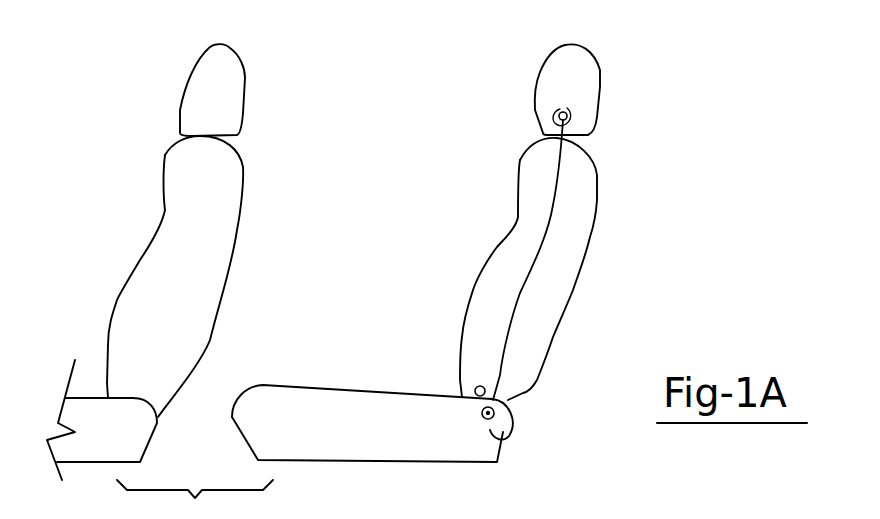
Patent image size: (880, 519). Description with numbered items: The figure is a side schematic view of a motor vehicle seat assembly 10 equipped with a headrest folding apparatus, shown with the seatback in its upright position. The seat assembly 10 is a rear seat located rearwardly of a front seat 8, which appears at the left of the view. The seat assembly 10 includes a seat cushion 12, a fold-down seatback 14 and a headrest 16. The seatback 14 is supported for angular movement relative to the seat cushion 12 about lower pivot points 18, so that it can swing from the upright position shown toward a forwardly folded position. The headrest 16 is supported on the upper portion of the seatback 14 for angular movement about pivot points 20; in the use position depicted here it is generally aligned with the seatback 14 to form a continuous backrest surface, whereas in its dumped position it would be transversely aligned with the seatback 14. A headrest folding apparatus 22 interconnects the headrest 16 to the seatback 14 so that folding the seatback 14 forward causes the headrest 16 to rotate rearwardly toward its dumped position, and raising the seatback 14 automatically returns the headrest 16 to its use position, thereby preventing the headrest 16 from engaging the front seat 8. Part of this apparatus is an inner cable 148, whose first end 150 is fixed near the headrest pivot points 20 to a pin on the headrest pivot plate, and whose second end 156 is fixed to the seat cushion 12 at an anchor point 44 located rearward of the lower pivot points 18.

The front seat 8 is at (247, 158).
The seat assembly 10 is at (717, 150).
The seat cushion 12 is at (330, 423).
The fold-down seatback 14 is at (558, 277).
The headrest 16 is at (587, 58).
The pivot points 18 is at (475, 390).
The pivot points 20 is at (559, 116).
The headrest folding apparatus 22 is at (563, 182).
The anchor point 44 is at (508, 437).
The inner cable 148 is at (543, 227).
The first end 150 is at (582, 110).
The second end 156 is at (502, 399).